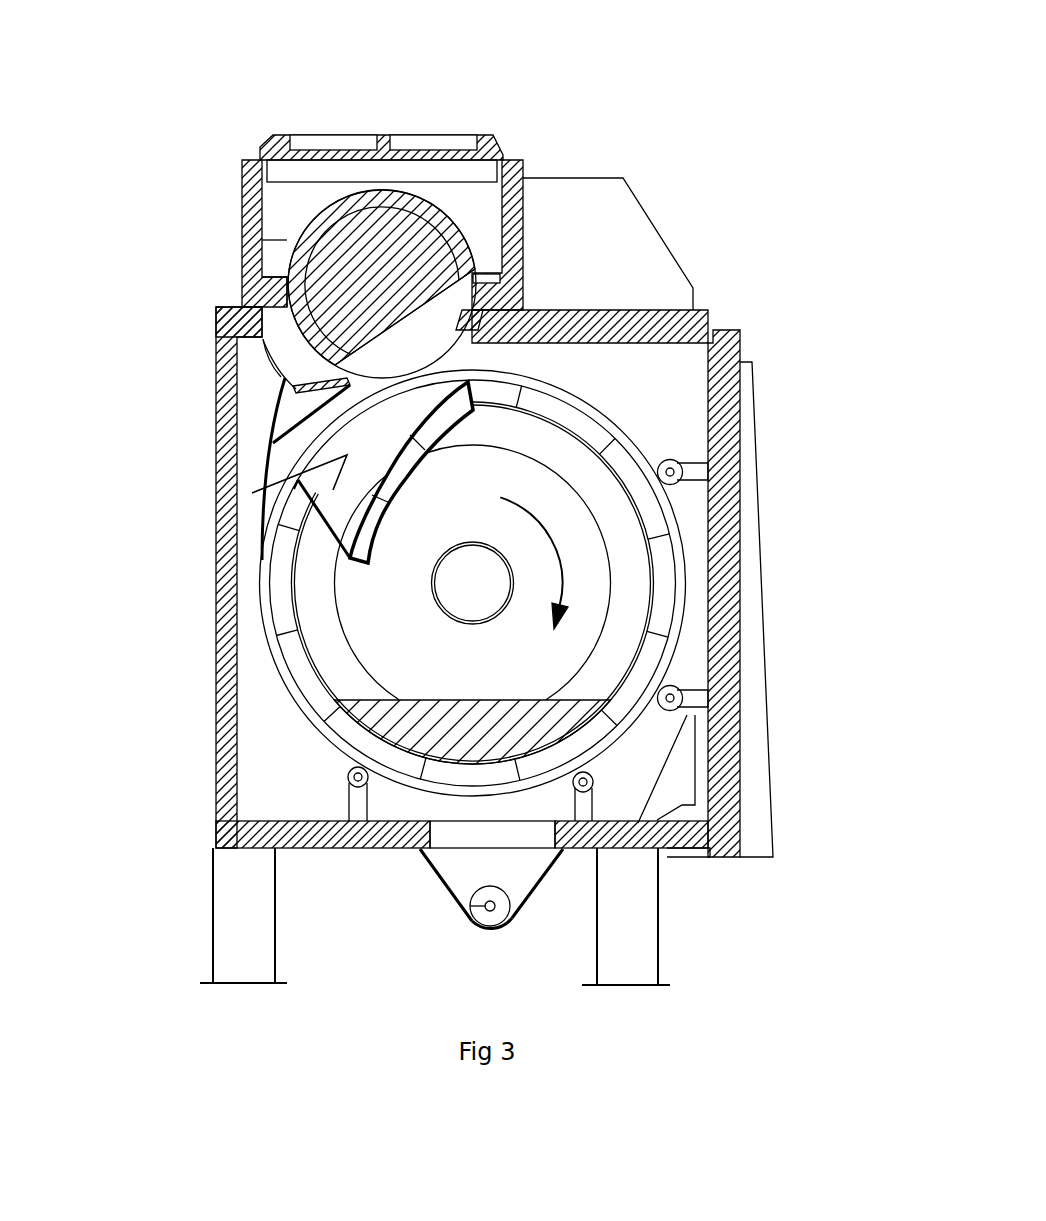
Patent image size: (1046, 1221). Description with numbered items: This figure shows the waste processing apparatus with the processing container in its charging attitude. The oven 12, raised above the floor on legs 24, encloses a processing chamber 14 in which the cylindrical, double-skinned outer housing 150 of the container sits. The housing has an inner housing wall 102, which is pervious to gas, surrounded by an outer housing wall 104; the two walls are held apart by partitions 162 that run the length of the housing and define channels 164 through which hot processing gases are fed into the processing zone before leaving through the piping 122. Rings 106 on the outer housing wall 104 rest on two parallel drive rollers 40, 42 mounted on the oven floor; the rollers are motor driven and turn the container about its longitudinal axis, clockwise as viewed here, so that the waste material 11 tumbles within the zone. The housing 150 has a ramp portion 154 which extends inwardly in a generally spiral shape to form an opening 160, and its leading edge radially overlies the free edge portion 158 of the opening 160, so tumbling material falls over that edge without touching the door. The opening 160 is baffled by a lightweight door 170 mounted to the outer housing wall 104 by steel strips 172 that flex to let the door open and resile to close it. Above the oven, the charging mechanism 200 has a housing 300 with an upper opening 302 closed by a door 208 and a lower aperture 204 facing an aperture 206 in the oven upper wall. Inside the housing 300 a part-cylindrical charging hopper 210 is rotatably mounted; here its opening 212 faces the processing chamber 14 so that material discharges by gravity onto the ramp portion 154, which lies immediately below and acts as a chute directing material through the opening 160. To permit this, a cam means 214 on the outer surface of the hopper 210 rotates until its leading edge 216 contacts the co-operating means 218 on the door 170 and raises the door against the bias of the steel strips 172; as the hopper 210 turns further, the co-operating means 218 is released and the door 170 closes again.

The charging mechanism 200 is at (183, 181).
The housing 300 is at (243, 187).
The upper opening 302 is at (308, 167).
The door 208 is at (488, 148).
The charging hopper 210 is at (387, 233).
The opening 212 is at (460, 288).
The aperture 204 is at (482, 290).
The leading edge 216 is at (288, 240).
The aperture 206 is at (283, 255).
The cam means 214 is at (270, 320).
The co-operating means 218 is at (280, 392).
The door 170 is at (278, 433).
The steel strips 172 is at (290, 472).
The outer housing 150 is at (467, 652).
The ramp portion 154 is at (427, 483).
The opening 160 is at (335, 468).
The free edge portion 158 is at (268, 555).
The channels 164 is at (305, 672).
The partitions 162 is at (657, 642).
The rings 106 is at (678, 557).
The outer housing wall 104 is at (657, 503).
The inner housing wall 102 is at (705, 611).
The piping 122 is at (477, 622).
The oven 12 is at (255, 630).
The processing chamber 14 is at (255, 765).
The legs 24 is at (232, 910).
The drive roller 40 is at (353, 777).
The drive roller 42 is at (600, 782).
The waste material 11 is at (467, 743).